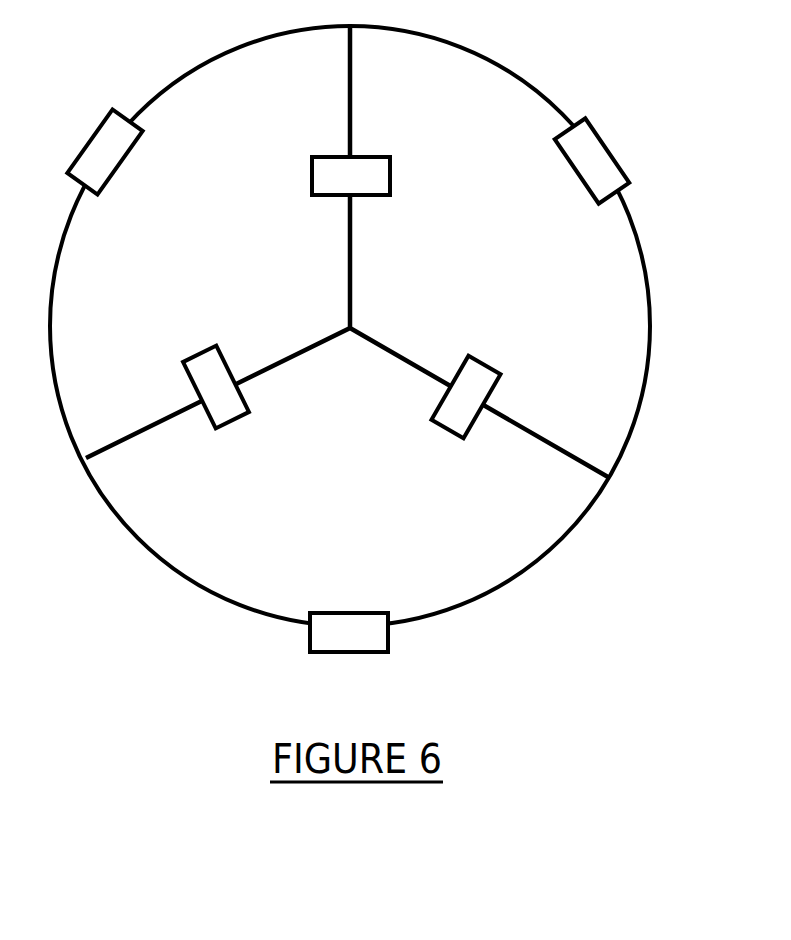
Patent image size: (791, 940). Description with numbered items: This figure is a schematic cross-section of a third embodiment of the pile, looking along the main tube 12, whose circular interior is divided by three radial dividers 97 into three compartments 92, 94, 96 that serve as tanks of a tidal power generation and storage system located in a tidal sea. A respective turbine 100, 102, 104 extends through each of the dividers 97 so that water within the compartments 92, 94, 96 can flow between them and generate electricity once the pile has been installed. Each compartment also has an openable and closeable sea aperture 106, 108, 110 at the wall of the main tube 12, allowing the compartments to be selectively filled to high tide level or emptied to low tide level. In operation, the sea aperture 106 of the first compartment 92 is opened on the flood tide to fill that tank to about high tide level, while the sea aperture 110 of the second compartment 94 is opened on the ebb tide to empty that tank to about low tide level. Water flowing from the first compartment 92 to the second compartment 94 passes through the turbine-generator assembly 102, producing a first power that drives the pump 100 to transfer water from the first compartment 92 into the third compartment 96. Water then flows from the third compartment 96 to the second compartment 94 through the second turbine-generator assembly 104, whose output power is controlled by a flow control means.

The main tube 12 is at (524, 77).
The first compartment 92 is at (236, 233).
The second compartment 94 is at (531, 230).
The third compartment 96 is at (401, 505).
The divider 97 is at (356, 256).
The turbine 100 is at (230, 412).
The turbine 102 is at (380, 175).
The turbine 104 is at (482, 373).
The sea aperture 106 is at (100, 153).
The sea aperture 108 is at (357, 640).
The sea aperture 110 is at (605, 158).